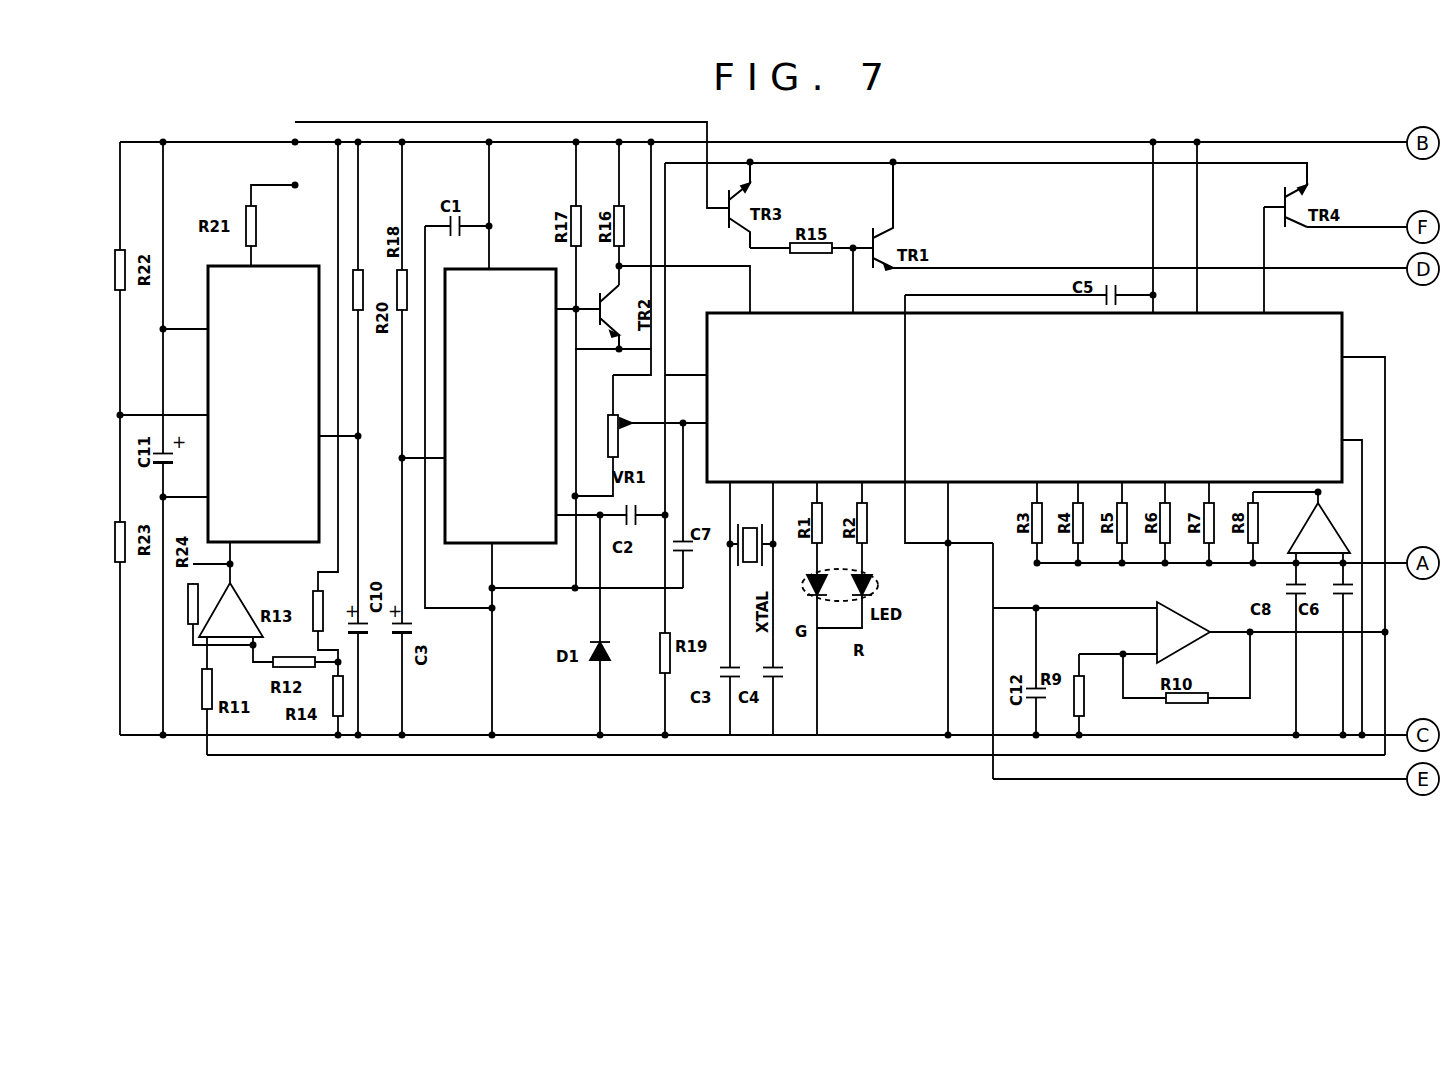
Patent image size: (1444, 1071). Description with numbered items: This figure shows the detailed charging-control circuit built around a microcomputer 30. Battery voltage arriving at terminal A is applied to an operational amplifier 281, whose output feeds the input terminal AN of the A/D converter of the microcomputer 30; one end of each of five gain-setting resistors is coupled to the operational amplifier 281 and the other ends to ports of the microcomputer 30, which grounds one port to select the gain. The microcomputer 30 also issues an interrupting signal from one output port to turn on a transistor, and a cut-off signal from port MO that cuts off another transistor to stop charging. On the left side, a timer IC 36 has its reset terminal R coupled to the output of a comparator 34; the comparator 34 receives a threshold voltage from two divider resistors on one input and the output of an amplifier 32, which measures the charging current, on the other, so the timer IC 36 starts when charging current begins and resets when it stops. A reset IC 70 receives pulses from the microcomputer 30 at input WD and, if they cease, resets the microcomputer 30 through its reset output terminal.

The timer IC 36 is at (222, 270).
The reset IC 70 is at (533, 274).
The comparator 34 is at (234, 592).
The microcomputer 30 is at (1329, 297).
The operational amplifier 281 is at (1328, 527).
The amplifier 32 is at (1184, 613).